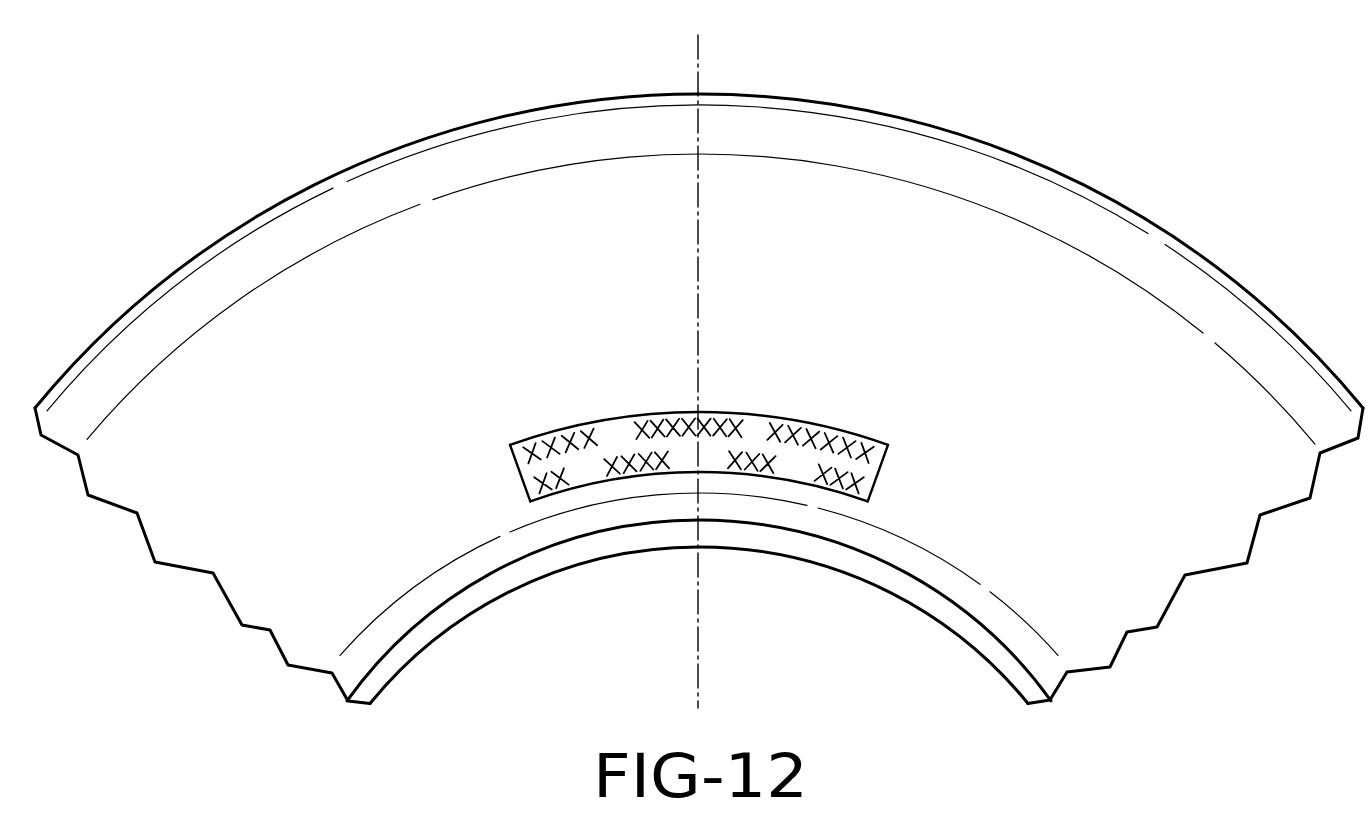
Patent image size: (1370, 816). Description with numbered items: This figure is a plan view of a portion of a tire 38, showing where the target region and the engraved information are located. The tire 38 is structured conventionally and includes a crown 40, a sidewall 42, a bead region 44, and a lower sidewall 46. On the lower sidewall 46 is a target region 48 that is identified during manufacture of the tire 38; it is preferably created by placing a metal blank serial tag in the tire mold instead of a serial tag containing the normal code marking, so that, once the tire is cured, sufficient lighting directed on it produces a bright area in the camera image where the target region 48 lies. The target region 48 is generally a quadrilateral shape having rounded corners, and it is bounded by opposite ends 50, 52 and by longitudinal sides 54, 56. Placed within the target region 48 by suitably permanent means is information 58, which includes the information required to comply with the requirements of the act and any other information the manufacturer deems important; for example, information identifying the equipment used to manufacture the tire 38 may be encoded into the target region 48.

The tire 38 is at (250, 172).
The crown 40 is at (413, 140).
The sidewall 42 is at (978, 222).
The bead region 44 is at (957, 622).
The lower sidewall 46 is at (1088, 612).
The target region 48 is at (699, 468).
The end 50 is at (510, 472).
The end 52 is at (885, 475).
The longitudinal side 54 is at (780, 415).
The longitudinal side 56 is at (762, 477).
The information 58 is at (602, 487).